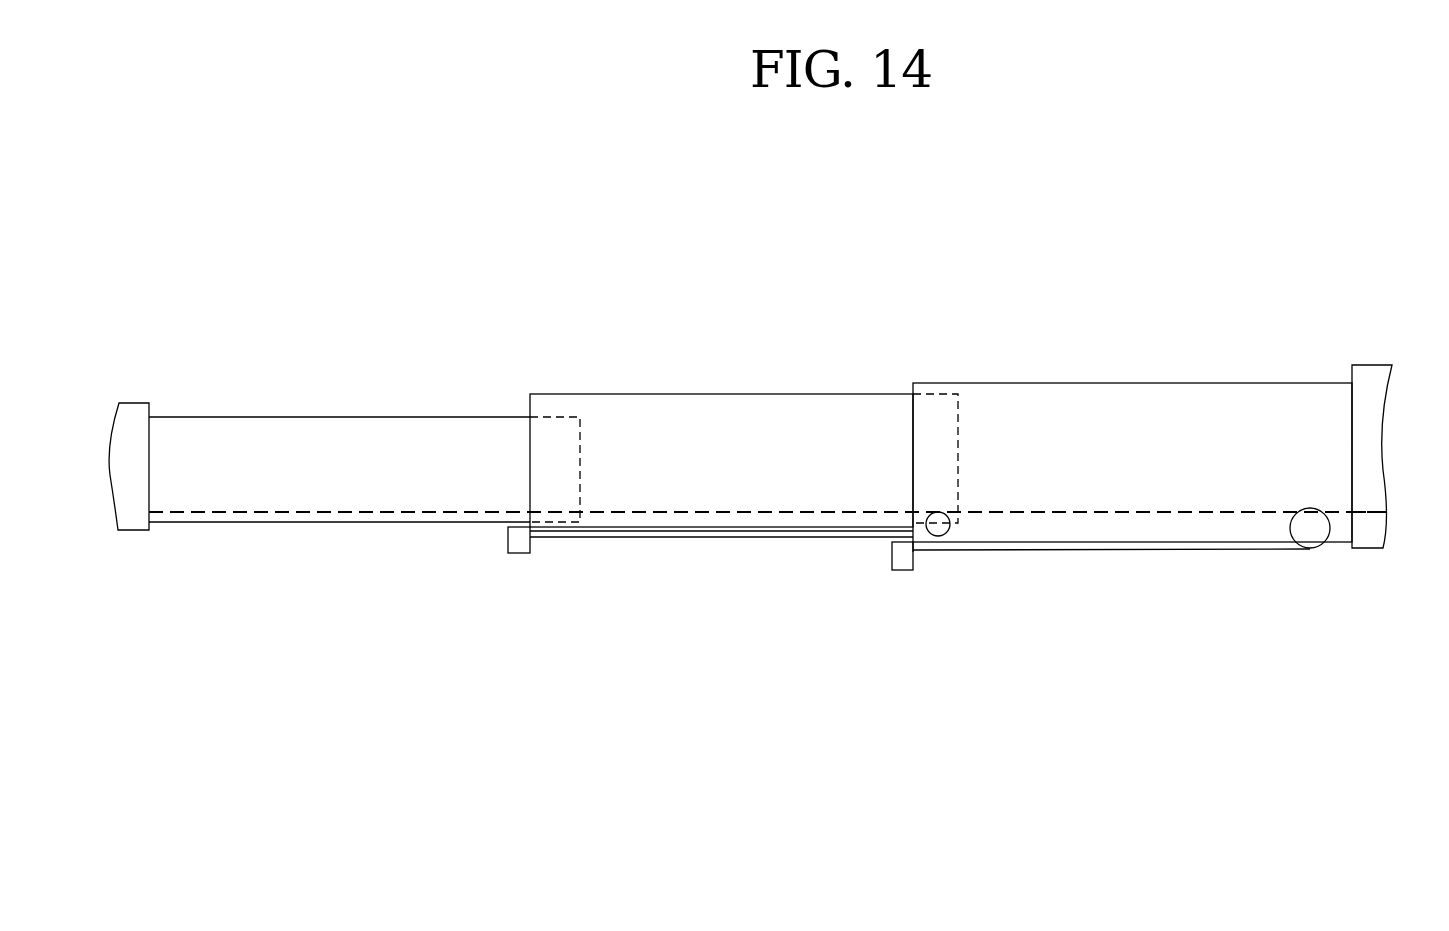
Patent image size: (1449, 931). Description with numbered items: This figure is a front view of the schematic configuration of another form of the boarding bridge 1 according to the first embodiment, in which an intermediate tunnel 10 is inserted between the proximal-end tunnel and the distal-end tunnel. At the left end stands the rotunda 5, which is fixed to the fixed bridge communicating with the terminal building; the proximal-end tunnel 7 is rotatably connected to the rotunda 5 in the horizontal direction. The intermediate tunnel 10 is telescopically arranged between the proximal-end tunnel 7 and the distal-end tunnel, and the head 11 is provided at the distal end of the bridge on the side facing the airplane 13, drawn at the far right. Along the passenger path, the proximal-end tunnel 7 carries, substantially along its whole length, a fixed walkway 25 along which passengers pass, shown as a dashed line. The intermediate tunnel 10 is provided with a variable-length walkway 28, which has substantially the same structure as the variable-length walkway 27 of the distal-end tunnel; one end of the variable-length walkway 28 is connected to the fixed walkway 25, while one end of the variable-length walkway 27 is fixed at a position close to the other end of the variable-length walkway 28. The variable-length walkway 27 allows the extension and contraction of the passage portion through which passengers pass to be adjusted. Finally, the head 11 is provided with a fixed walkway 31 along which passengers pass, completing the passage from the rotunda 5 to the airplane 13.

The boarding bridge 1 is at (812, 250).
The rotunda 5 is at (131, 403).
The proximal-end tunnel 7 is at (318, 416).
The intermediate tunnel 10 is at (677, 394).
The head 11 is at (1130, 383).
The airplane 13 is at (1368, 365).
The fixed walkway 25 is at (413, 512).
The variable-length walkway 27 is at (1178, 463).
The variable-length walkway 28 is at (796, 468).
The fixed walkway 31 is at (1365, 510).